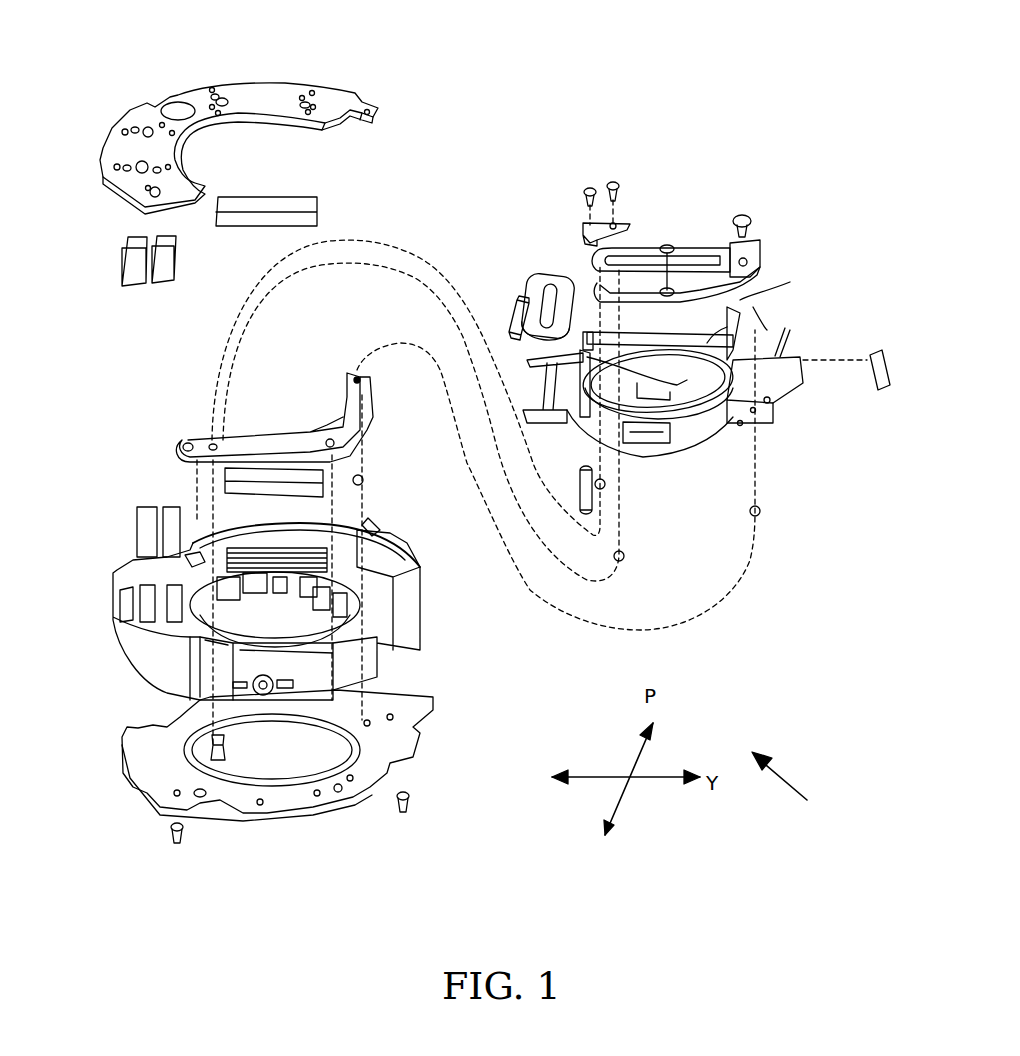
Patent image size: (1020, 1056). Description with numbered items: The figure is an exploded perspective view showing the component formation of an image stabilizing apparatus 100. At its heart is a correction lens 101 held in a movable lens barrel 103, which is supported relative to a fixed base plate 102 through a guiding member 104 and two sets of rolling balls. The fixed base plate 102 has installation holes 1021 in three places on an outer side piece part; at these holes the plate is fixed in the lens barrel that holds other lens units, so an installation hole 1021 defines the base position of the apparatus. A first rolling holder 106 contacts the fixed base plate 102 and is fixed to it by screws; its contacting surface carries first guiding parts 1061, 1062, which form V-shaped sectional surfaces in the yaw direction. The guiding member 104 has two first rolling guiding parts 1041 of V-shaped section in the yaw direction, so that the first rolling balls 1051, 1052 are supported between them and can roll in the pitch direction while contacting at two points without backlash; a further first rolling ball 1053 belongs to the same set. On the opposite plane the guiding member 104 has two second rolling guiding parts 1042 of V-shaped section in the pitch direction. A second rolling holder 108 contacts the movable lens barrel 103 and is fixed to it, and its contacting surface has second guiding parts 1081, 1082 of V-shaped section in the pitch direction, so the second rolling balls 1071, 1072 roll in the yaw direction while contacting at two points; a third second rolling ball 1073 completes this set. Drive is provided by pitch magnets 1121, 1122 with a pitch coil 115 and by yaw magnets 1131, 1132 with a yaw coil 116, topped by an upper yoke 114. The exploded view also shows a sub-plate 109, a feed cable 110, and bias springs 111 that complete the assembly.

The image stabilizing apparatus 100 is at (793, 788).
The correction lens 101 is at (745, 315).
The fixed base plate 102 is at (293, 616).
The movable lens barrel 103 is at (710, 432).
The guiding member 104 is at (271, 396).
The first rolling guiding part 1041 is at (336, 443).
The second rolling guiding part 1042 is at (343, 400).
The first rolling ball 1051 is at (365, 485).
The first rolling ball 1052 is at (380, 532).
The first rolling ball 1053 is at (200, 550).
The first rolling holder 106 is at (270, 780).
The first guiding part 1061 is at (393, 717).
The first guiding part 1062 is at (339, 792).
The second rolling ball 1071 is at (760, 511).
The second rolling ball 1072 is at (625, 556).
The second rolling ball 1073 is at (605, 488).
The second rolling holder 108 is at (734, 221).
The second guiding part 1081 is at (754, 245).
The second guiding part 1082 is at (613, 285).
The sub-plate 109 is at (585, 232).
The feed cable 110 is at (770, 415).
The bias spring 111 is at (515, 318).
The installation hole 1021 is at (278, 688).
The pitch magnet 1121 is at (142, 525).
The pitch magnet 1122 is at (158, 272).
The yaw magnet 1131 is at (330, 476).
The yaw magnet 1132 is at (270, 207).
The upper yoke 114 is at (272, 95).
The pitch coil 115 is at (540, 280).
The yaw coil 116 is at (690, 247).